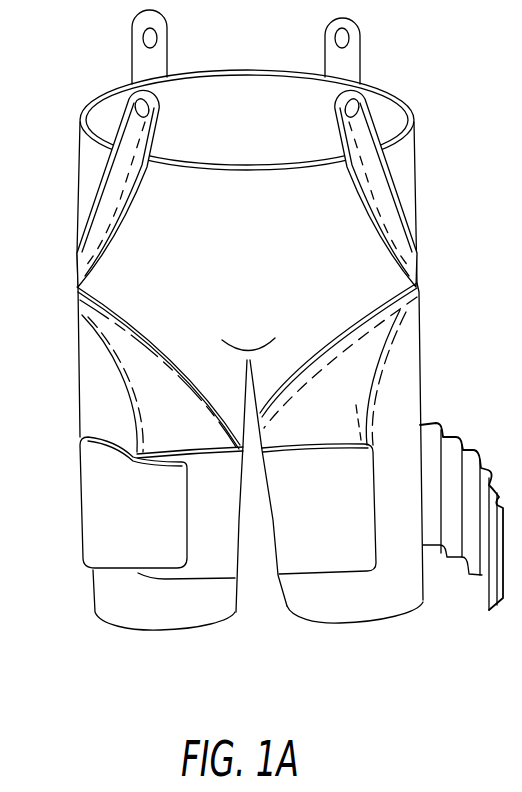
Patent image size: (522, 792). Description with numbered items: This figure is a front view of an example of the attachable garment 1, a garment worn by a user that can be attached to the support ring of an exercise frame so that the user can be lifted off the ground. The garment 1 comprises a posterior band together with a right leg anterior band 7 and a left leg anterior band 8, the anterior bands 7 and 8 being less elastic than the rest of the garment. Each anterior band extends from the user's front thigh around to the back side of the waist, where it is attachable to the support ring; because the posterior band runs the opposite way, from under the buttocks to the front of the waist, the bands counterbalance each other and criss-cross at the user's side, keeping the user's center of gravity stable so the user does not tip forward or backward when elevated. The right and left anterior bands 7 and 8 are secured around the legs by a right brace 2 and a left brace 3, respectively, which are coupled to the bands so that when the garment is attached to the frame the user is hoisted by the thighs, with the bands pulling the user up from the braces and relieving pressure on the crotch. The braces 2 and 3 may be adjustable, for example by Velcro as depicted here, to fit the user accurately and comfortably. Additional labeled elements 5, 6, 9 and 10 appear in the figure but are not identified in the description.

The attachable garment 1 is at (412, 157).
The right brace 2 is at (100, 517).
The left brace 3 is at (440, 430).
The upper right strap 5 is at (362, 172).
The upper left strap 6 is at (114, 170).
The right leg anterior band 7 is at (153, 370).
The left leg anterior band 8 is at (338, 368).
The left attachment lug 9 is at (148, 63).
The right attachment lug 10 is at (343, 57).